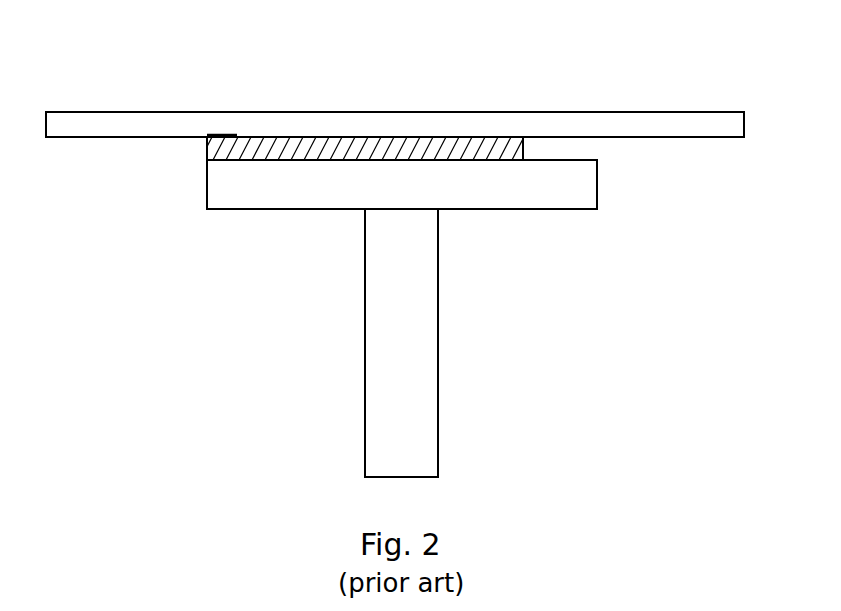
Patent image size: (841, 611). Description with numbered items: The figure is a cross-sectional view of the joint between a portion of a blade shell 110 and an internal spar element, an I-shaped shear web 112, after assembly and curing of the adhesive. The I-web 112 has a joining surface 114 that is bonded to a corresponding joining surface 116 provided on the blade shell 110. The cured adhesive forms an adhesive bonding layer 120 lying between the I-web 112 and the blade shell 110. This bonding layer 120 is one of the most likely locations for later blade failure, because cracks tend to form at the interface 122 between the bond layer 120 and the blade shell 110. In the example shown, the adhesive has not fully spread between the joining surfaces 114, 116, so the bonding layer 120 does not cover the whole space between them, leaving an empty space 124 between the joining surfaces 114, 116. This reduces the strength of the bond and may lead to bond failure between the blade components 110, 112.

The blade shell 110 is at (97, 138).
The I-shaped shear web 112 is at (390, 318).
The joining surface 114 is at (490, 157).
The joining surface 116 is at (460, 137).
The adhesive bonding layer 120 is at (356, 145).
The interface 122 is at (189, 116).
The empty space 124 is at (594, 160).